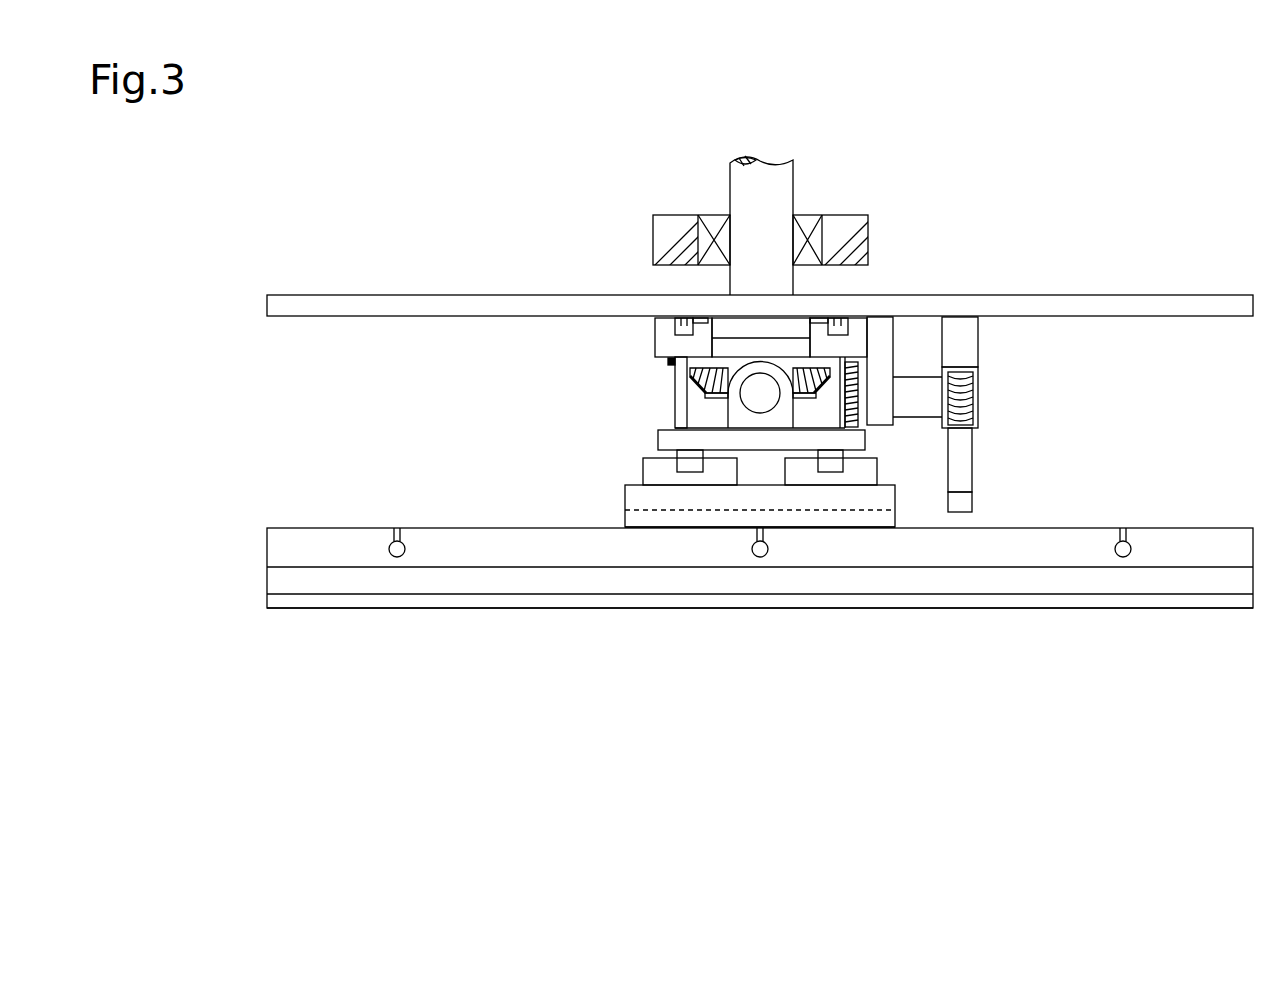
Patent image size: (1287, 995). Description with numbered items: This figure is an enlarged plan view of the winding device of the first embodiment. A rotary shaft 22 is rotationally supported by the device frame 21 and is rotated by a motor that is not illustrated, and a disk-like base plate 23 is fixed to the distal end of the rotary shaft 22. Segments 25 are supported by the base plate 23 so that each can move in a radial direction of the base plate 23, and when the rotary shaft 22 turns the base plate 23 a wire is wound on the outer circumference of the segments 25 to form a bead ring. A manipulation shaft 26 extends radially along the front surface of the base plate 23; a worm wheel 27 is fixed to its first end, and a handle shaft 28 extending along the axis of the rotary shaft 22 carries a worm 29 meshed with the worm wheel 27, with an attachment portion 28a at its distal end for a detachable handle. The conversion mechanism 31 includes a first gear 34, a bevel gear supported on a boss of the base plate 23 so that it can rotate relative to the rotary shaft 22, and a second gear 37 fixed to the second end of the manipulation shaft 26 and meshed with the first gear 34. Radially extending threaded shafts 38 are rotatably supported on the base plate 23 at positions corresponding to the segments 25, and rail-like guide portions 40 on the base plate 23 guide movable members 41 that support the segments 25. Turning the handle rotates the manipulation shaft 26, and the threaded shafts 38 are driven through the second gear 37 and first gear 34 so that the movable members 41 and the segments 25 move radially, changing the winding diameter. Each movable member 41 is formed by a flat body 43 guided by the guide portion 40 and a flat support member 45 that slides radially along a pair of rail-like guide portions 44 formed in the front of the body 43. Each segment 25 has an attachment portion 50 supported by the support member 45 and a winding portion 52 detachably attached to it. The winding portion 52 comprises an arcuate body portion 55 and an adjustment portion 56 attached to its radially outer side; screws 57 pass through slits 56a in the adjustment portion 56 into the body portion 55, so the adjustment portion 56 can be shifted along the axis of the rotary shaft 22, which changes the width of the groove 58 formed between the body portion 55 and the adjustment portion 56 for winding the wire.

The device frame 21 is at (680, 213).
The rotary shaft 22 is at (795, 181).
The base plate 23 is at (1160, 294).
The segment 25 is at (1080, 614).
The manipulation shaft 26 is at (913, 412).
The worm wheel 27 is at (977, 377).
The handle shaft 28 is at (968, 443).
The attachment portion 28a is at (968, 502).
The worm 29 is at (978, 399).
The conversion mechanism 31 is at (664, 365).
The first gear 34 is at (690, 392).
The second gear 37 is at (860, 367).
The threaded shaft 38 is at (758, 390).
The guide portion 40 is at (681, 328).
The movable member 41 is at (722, 478).
The body 43 is at (658, 436).
The guide portion 44 is at (677, 462).
The support member 45 is at (734, 506).
The attachment portion 50 is at (895, 527).
The winding portion 52 is at (760, 606).
The body portion 55 is at (586, 604).
The adjustment portion 56 is at (640, 556).
The slit 56a is at (395, 540).
The screw 57 is at (408, 550).
The groove 58 is at (458, 593).